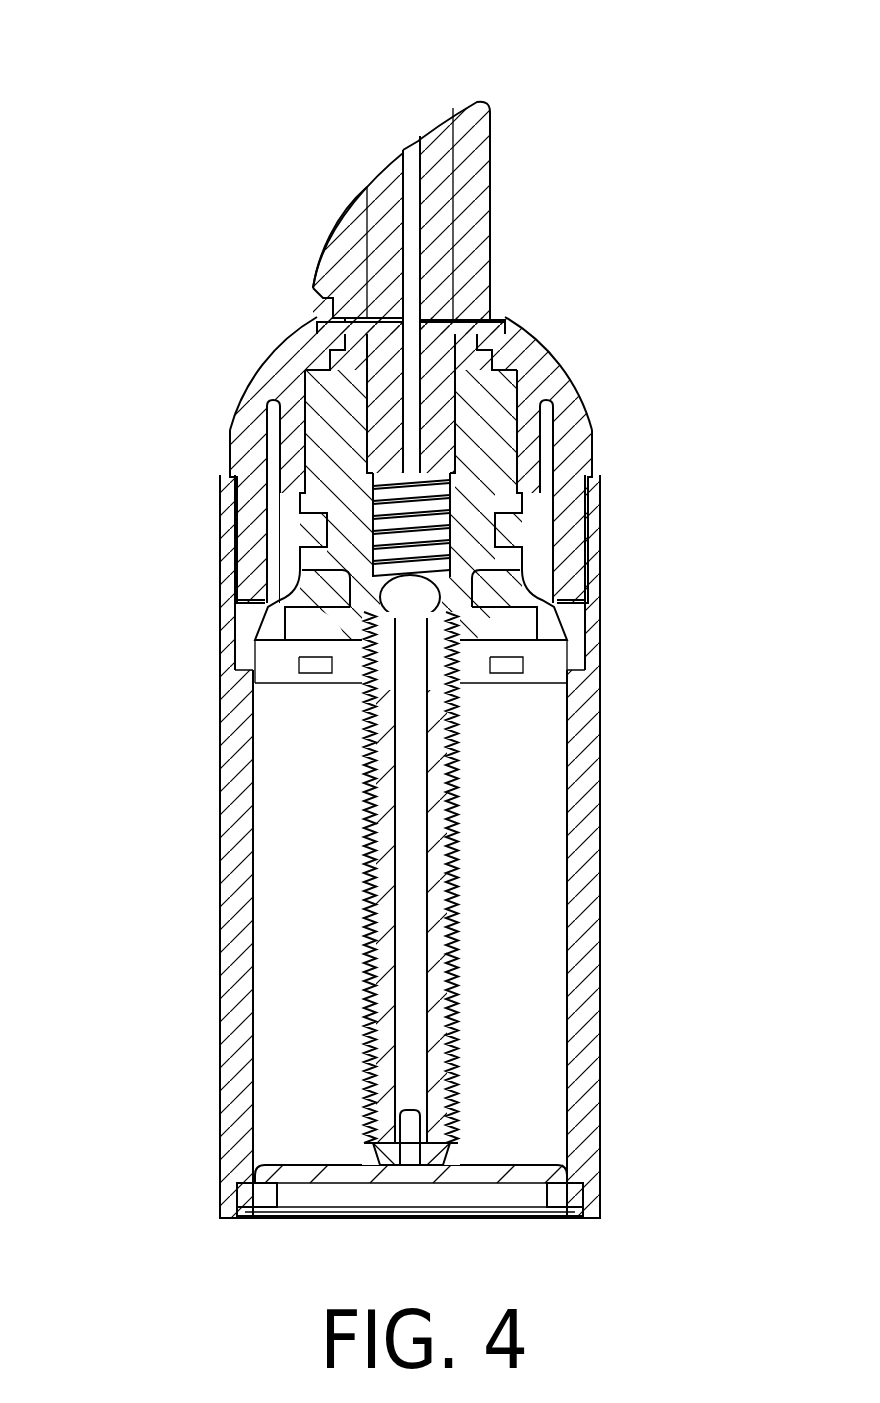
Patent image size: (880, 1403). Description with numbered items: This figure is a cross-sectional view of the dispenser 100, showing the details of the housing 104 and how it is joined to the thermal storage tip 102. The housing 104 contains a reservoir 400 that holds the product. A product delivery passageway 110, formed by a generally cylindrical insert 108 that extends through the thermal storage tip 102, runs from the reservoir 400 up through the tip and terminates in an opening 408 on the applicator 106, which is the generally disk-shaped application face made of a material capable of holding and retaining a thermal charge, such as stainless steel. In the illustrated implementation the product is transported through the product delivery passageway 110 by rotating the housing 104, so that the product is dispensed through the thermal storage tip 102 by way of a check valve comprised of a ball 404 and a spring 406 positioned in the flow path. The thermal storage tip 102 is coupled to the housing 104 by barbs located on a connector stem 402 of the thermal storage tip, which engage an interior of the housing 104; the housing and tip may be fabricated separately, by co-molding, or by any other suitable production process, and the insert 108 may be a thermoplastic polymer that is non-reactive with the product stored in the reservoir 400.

The dispenser 100 is at (192, 68).
The thermal storage tip 102 is at (478, 150).
The housing 104 is at (225, 1022).
The applicator 106 is at (330, 228).
The insert 108 is at (433, 135).
The product delivery passageway 110 is at (403, 838).
The reservoir 400 is at (510, 1082).
The connector stem 402 is at (330, 358).
The ball 404 is at (410, 597).
The spring 406 is at (405, 505).
The opening 408 is at (402, 150).